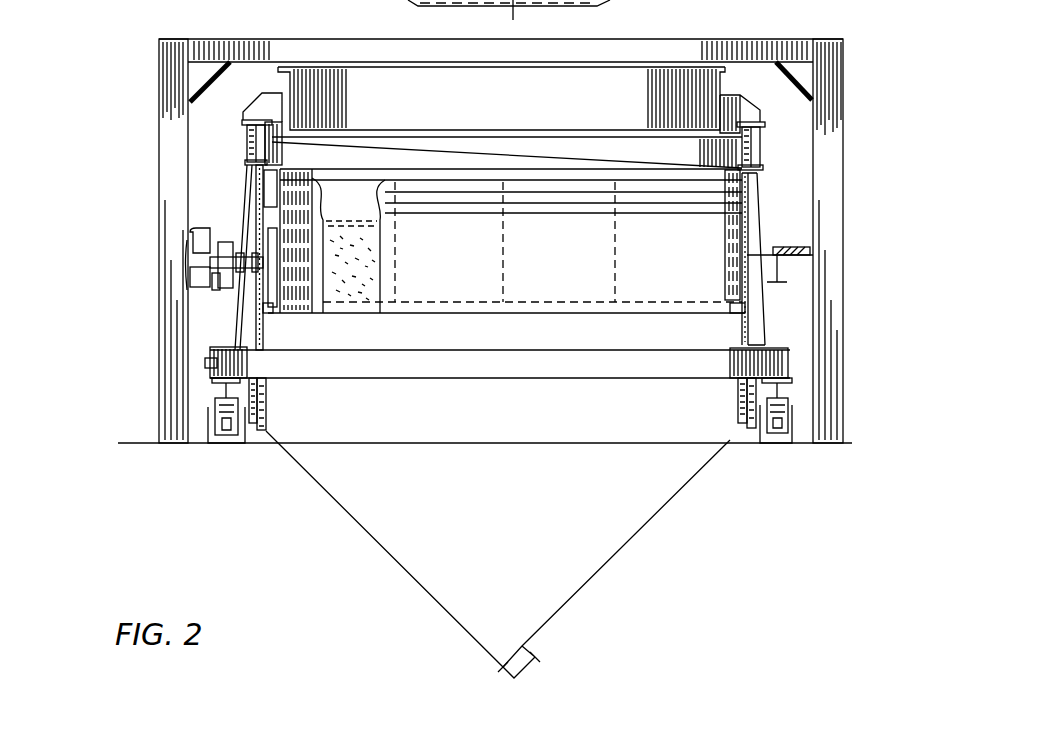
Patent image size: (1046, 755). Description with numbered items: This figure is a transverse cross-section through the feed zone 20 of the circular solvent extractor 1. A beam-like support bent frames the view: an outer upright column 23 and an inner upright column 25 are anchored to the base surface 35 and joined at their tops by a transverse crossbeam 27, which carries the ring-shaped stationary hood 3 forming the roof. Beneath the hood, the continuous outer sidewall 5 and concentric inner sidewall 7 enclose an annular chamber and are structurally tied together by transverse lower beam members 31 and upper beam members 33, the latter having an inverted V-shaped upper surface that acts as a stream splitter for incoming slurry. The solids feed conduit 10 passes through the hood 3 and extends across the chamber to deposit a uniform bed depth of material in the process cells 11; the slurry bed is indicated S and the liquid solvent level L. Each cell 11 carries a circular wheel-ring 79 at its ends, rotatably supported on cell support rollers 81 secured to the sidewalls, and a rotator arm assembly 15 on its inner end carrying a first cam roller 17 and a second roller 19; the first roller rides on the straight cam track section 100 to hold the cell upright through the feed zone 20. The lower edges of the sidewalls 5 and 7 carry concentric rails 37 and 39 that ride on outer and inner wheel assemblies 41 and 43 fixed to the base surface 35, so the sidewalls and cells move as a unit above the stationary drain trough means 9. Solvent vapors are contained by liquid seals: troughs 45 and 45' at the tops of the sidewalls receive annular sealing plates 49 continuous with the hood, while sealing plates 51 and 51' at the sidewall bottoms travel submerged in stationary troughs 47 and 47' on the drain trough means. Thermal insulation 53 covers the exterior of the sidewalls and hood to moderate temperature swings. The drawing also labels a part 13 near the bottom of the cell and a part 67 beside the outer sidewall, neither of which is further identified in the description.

The circular solvent extractor 1 is at (852, 30).
The stationary hood 3 is at (730, 95).
The outer sidewall 5 is at (747, 222).
The inner sidewall 7 is at (257, 203).
The drain trough means 9 is at (635, 546).
The solids feed conduit 10 is at (517, 110).
The process cells 11 is at (560, 262).
The screen 13 is at (545, 315).
The rotator arm assembly 15 is at (257, 293).
The first cam roller 17 is at (222, 232).
The second roller 19 is at (213, 285).
The feed zone 20 is at (503, 224).
The outer upright column 23 is at (833, 152).
The inner upright column 25 is at (158, 112).
The transverse crossbeam 27 is at (740, 38).
The lower beam members 31 is at (418, 372).
The upper beam members 33 is at (653, 153).
The base surface 35 is at (125, 443).
The outer rail 37 is at (783, 392).
The inner rail 39 is at (227, 392).
The outer wheel assemblies 41 is at (778, 432).
The inner wheel assemblies 43 is at (230, 433).
The upper outer liquid seal trough 45 is at (776, 146).
The upper inner liquid seal trough 45' is at (248, 128).
The lower outer liquid trough 47 is at (714, 411).
The lower inner liquid trough 47' is at (306, 407).
The annular sealing plate 49 is at (740, 135).
The annular sealing plate 51 is at (709, 400).
The annular sealing plate 51' is at (297, 400).
The thermal insulation 53 is at (746, 328).
The tray 67 is at (785, 250).
The wheel-ring 79 is at (730, 247).
The cell support rollers 81 is at (273, 315).
The straight cam track section 100 is at (193, 242).
The liquid solvent level L is at (393, 223).
The slurry bed S is at (377, 273).